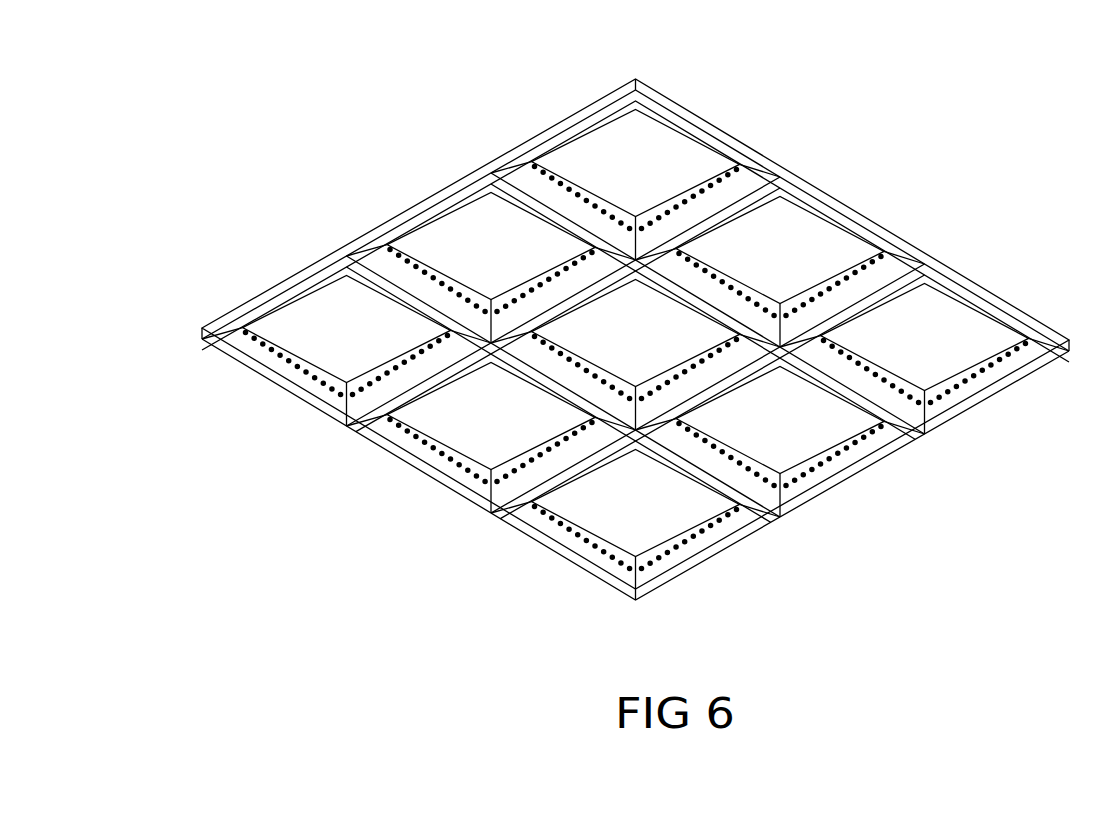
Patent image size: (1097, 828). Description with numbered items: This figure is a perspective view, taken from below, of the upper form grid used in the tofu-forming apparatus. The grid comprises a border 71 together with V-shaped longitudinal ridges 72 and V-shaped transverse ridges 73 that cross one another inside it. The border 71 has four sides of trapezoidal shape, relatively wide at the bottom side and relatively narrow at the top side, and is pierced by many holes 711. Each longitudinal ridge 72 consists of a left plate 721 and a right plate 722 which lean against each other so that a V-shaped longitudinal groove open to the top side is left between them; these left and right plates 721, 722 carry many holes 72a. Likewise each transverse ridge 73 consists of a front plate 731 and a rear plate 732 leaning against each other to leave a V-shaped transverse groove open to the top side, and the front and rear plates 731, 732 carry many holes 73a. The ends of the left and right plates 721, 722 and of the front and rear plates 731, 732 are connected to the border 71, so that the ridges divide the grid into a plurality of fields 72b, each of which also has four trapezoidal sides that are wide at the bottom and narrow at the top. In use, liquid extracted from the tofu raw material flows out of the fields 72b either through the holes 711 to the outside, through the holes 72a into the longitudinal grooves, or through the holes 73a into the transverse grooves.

The border 71 is at (1020, 365).
The holes 711 is at (962, 383).
The V-shaped longitudinal ridge 72 is at (387, 295).
The holes 72a is at (405, 214).
The fields 72b is at (640, 147).
The left plate 721 is at (440, 270).
The right plate 722 is at (560, 172).
The V-shaped transverse ridge 73 is at (440, 390).
The holes 73a is at (490, 505).
The front plate 731 is at (698, 177).
The rear plate 732 is at (743, 220).